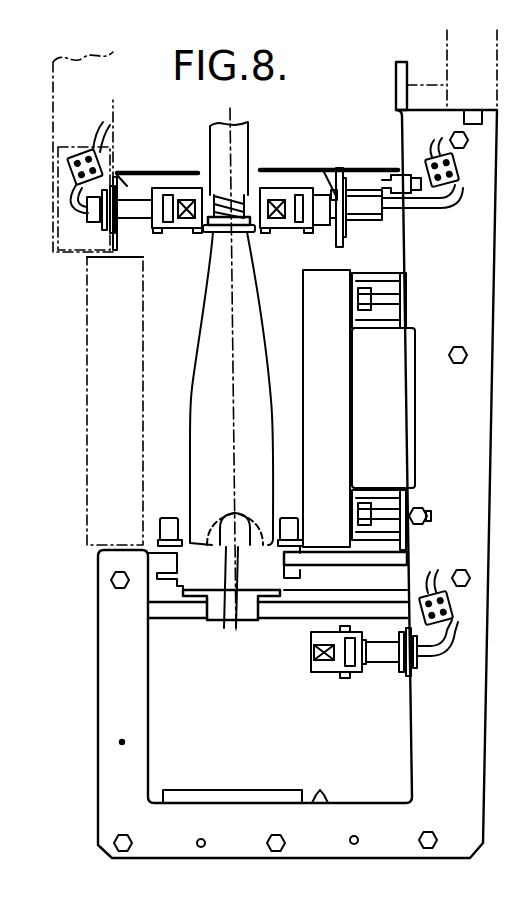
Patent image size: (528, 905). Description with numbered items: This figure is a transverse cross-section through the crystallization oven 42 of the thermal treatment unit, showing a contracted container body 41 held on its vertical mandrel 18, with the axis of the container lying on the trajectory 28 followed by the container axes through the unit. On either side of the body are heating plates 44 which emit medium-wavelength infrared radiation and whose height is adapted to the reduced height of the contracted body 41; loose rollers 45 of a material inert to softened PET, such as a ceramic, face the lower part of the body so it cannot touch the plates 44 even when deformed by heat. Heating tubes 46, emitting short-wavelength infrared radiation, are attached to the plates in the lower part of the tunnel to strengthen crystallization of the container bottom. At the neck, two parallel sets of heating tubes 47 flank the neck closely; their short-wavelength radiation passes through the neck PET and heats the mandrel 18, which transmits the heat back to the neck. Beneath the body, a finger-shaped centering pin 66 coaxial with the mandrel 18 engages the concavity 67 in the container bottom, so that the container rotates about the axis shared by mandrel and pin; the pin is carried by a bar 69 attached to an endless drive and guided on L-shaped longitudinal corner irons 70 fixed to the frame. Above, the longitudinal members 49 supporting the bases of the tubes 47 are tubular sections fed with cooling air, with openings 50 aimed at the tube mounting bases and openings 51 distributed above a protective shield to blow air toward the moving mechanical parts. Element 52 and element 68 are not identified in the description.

The vertical mandrel 18 is at (236, 192).
The trajectory 28 is at (232, 358).
The container body 41 is at (212, 393).
The crystallization oven 42 is at (184, 430).
The heating plates 44 is at (340, 425).
The loose rollers 45 is at (170, 517).
The heating tubes 46 is at (311, 650).
The heating tubes 47 is at (188, 228).
The longitudinal members 49 is at (58, 165).
The openings 50 is at (112, 187).
The openings 51 is at (113, 158).
The mounting bar 52 is at (168, 169).
The centering pins 66 is at (232, 572).
The concavities 67 is at (210, 547).
The dome cap 68 is at (258, 535).
The bars 69 is at (203, 603).
The L-shaped longitudinal corner irons 70 is at (183, 586).